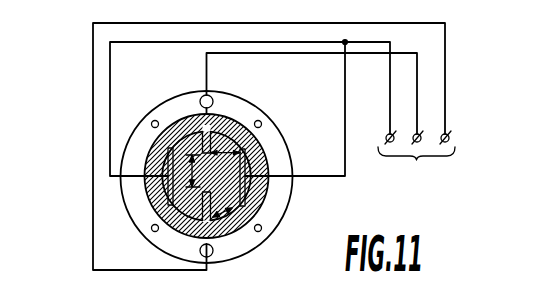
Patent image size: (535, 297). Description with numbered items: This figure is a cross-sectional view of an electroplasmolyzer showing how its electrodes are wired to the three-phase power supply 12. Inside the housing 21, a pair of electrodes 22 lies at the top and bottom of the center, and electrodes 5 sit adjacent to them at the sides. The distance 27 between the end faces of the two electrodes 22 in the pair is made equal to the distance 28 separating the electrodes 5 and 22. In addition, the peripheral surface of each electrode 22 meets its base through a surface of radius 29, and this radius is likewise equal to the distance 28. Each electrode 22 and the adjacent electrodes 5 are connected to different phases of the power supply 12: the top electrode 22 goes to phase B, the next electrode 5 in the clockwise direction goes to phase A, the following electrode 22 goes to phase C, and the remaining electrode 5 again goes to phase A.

The electrode 5 is at (169, 122).
The three-phase power supply 12 is at (419, 150).
The housing flange 21 is at (135, 187).
The electrode 22 is at (211, 137).
The distance between end faces of electrodes 27 is at (199, 172).
The distance between electrodes 28 is at (226, 164).
The radius 29 is at (223, 201).